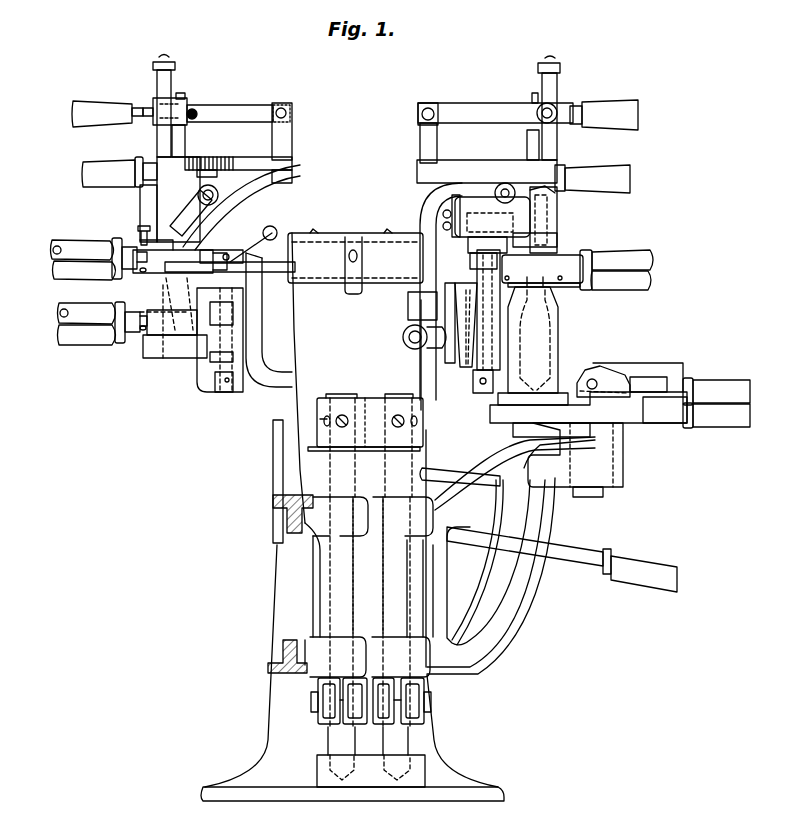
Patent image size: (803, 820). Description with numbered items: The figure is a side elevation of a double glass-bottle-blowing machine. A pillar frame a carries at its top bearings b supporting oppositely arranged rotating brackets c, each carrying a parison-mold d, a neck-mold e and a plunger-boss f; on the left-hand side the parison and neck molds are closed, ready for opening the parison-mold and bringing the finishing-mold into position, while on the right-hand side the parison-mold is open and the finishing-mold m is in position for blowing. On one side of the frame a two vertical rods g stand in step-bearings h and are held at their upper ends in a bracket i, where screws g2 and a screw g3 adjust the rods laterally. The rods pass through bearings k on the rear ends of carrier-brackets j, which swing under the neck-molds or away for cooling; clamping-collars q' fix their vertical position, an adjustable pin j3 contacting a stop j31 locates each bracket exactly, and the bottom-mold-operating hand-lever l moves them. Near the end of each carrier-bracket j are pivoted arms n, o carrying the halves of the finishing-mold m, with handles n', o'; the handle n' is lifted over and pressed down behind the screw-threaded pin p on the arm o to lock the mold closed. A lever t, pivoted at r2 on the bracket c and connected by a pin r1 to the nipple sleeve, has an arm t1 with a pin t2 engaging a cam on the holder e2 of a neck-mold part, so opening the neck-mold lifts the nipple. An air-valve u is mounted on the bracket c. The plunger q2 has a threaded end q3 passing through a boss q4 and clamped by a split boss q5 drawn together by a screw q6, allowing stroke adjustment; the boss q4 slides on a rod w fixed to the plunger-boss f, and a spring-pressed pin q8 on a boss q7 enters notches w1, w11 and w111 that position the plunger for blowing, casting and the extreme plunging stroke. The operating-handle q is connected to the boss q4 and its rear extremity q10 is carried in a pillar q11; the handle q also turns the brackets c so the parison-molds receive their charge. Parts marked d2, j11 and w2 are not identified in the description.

The frame a is at (362, 455).
The bearings b is at (330, 243).
The rotating bracket c is at (294, 322).
The parison-mold d is at (150, 323).
The jaw plate d2 is at (205, 345).
The neck-mold e is at (545, 270).
The holder of neck-mold part e2 is at (172, 262).
The plunger-boss f is at (162, 193).
The vertical rod g is at (330, 475).
The screw g2 is at (342, 415).
The screw g3 is at (327, 416).
The step-bearing h is at (317, 768).
The bracket i is at (371, 408).
The carrier-bracket j is at (447, 520).
The guide bar j11 is at (273, 462).
The adjustable pin j3 is at (455, 495).
The stop j31 is at (424, 452).
The bearing k is at (385, 530).
The bottom-mold-operating hand-lever l is at (583, 565).
The finishing-mold m is at (562, 330).
The pivoted arm n is at (612, 369).
The handle n' is at (716, 379).
The pivoted arm o is at (663, 420).
The handle o' is at (717, 423).
The screw-threaded pin p is at (652, 390).
The operating-handle q is at (350, 111).
The clamping-collar q' is at (376, 713).
The plunger q2 is at (195, 133).
The screw-threaded extremity q3 is at (196, 110).
The boss q4 is at (155, 108).
The split boss q5 is at (225, 158).
The screw q6 is at (200, 115).
The boss q7 is at (183, 95).
The pin q8 is at (145, 110).
The rear extremity of operating-lever q10 is at (284, 105).
The pillar q11 is at (292, 135).
The pin r1 is at (140, 237).
The pivot r2 is at (267, 246).
The lever t is at (283, 190).
The arm t1 is at (278, 228).
The pin t2 is at (243, 260).
The air-valve u is at (218, 192).
The rod w is at (157, 150).
The notch w1 is at (160, 78).
The notch w11 is at (157, 90).
The notch w111 is at (157, 135).
The post base w2 is at (160, 232).